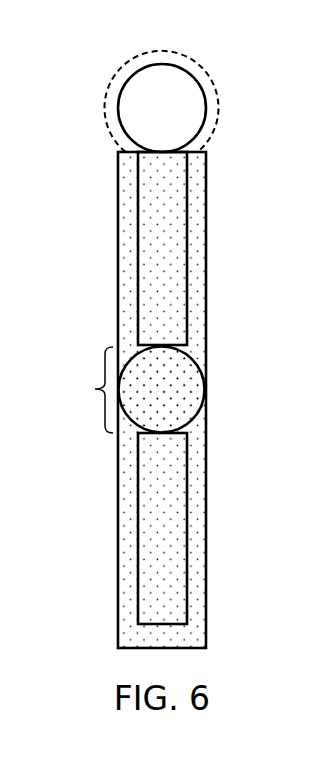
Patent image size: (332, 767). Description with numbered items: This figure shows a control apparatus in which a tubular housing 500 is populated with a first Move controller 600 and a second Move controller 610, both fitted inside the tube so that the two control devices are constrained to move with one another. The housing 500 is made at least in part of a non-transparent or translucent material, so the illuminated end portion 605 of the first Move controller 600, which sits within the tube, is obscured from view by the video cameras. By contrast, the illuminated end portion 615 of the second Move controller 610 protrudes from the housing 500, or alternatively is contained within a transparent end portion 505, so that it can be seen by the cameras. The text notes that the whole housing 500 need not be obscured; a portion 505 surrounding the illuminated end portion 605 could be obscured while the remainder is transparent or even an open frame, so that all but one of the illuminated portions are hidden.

The housing 500 is at (207, 327).
The end portion 505 is at (164, 50).
The first Move controller 600 is at (145, 522).
The illuminated end portion 605 is at (193, 390).
The second Move controller 610 is at (145, 257).
The illuminated end portion 615 is at (206, 110).